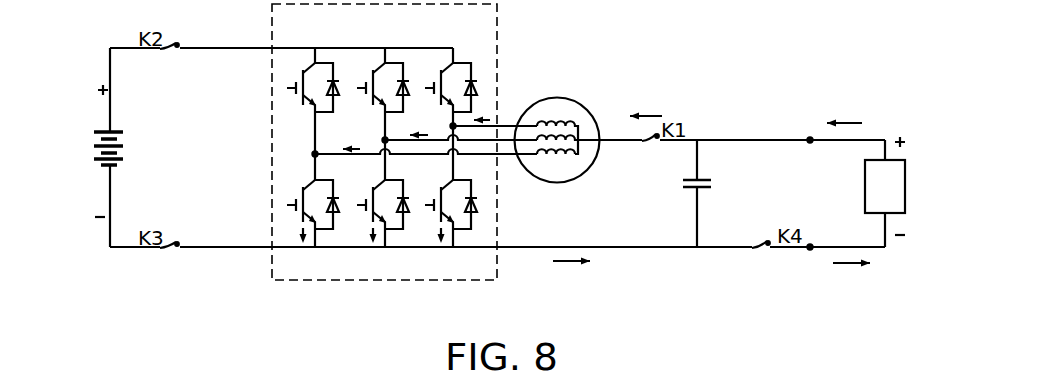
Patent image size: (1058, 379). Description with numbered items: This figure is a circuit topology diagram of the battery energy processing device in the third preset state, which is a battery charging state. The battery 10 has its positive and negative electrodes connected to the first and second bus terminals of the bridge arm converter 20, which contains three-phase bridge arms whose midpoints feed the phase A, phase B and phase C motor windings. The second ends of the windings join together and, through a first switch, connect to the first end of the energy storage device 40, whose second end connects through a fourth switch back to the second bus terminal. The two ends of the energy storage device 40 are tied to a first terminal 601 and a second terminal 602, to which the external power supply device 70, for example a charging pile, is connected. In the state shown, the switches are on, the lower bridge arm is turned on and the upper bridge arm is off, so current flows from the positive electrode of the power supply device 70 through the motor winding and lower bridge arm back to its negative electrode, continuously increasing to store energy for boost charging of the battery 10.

The battery 10 is at (88, 157).
The bridge arm converter 20 is at (503, 20).
The energy storage device 40 is at (718, 186).
The power supply device 70 is at (913, 185).
The first terminal 601 is at (810, 140).
The second terminal 602 is at (810, 247).